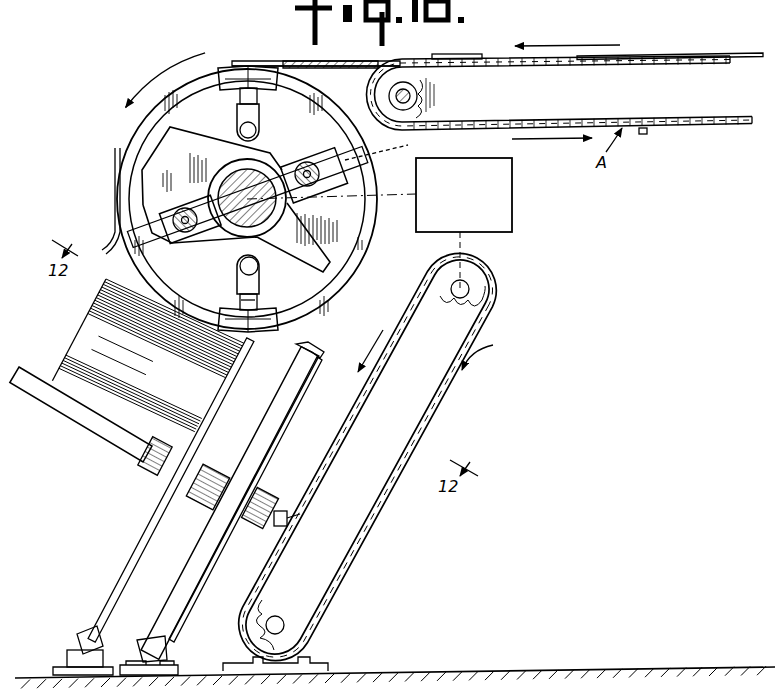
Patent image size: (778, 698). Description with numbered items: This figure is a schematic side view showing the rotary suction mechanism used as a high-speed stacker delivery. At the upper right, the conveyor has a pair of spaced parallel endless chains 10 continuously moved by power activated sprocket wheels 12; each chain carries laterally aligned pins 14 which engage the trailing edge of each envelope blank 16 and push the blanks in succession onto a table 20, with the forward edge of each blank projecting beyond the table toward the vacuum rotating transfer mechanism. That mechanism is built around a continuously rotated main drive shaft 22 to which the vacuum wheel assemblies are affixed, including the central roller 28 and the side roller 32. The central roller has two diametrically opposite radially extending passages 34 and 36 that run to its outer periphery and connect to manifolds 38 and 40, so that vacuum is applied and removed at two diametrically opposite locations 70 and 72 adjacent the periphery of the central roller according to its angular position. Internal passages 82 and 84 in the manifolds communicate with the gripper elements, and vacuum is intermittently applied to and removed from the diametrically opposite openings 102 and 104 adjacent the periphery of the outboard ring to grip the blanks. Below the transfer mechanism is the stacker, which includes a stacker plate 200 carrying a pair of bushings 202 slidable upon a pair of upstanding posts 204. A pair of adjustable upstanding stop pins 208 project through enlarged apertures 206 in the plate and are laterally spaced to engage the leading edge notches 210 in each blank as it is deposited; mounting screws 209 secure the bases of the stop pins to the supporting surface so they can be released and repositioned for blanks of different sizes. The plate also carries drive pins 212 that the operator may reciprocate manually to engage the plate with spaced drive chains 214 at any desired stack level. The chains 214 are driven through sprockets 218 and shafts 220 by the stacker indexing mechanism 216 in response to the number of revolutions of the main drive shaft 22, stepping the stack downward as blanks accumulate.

The endless chain 10 is at (546, 67).
The sprocket wheel 12 is at (430, 106).
The pin 14 is at (437, 55).
The envelope blank 16 is at (301, 60).
The table 20 is at (338, 70).
The main drive shaft 22 is at (238, 175).
The central roller 28 is at (266, 302).
The side roller 32 is at (212, 78).
The radially extending passage 34 is at (258, 98).
The radially extending passage 36 is at (240, 302).
The manifold 38 is at (240, 131).
The manifold 40 is at (259, 262).
The vacuum location 70 is at (247, 66).
The vacuum location 72 is at (282, 326).
The internal passage 82 is at (307, 158).
The internal passage 84 is at (184, 206).
The opening 102 is at (130, 232).
The opening 104 is at (376, 147).
The stacker plate 200 is at (88, 432).
The bushing 202 is at (214, 510).
The upstanding post 204 is at (180, 596).
The enlarged aperture 206 is at (154, 478).
The stop pin 208 is at (112, 588).
The mounting screw 209 is at (66, 662).
The leading edge notch 210 is at (226, 398).
The drive pin 212 is at (284, 504).
The drive chain 214 is at (404, 494).
The stacker indexing mechanism 216 is at (518, 204).
The sprocket 218 is at (480, 312).
The shaft 220 is at (465, 288).